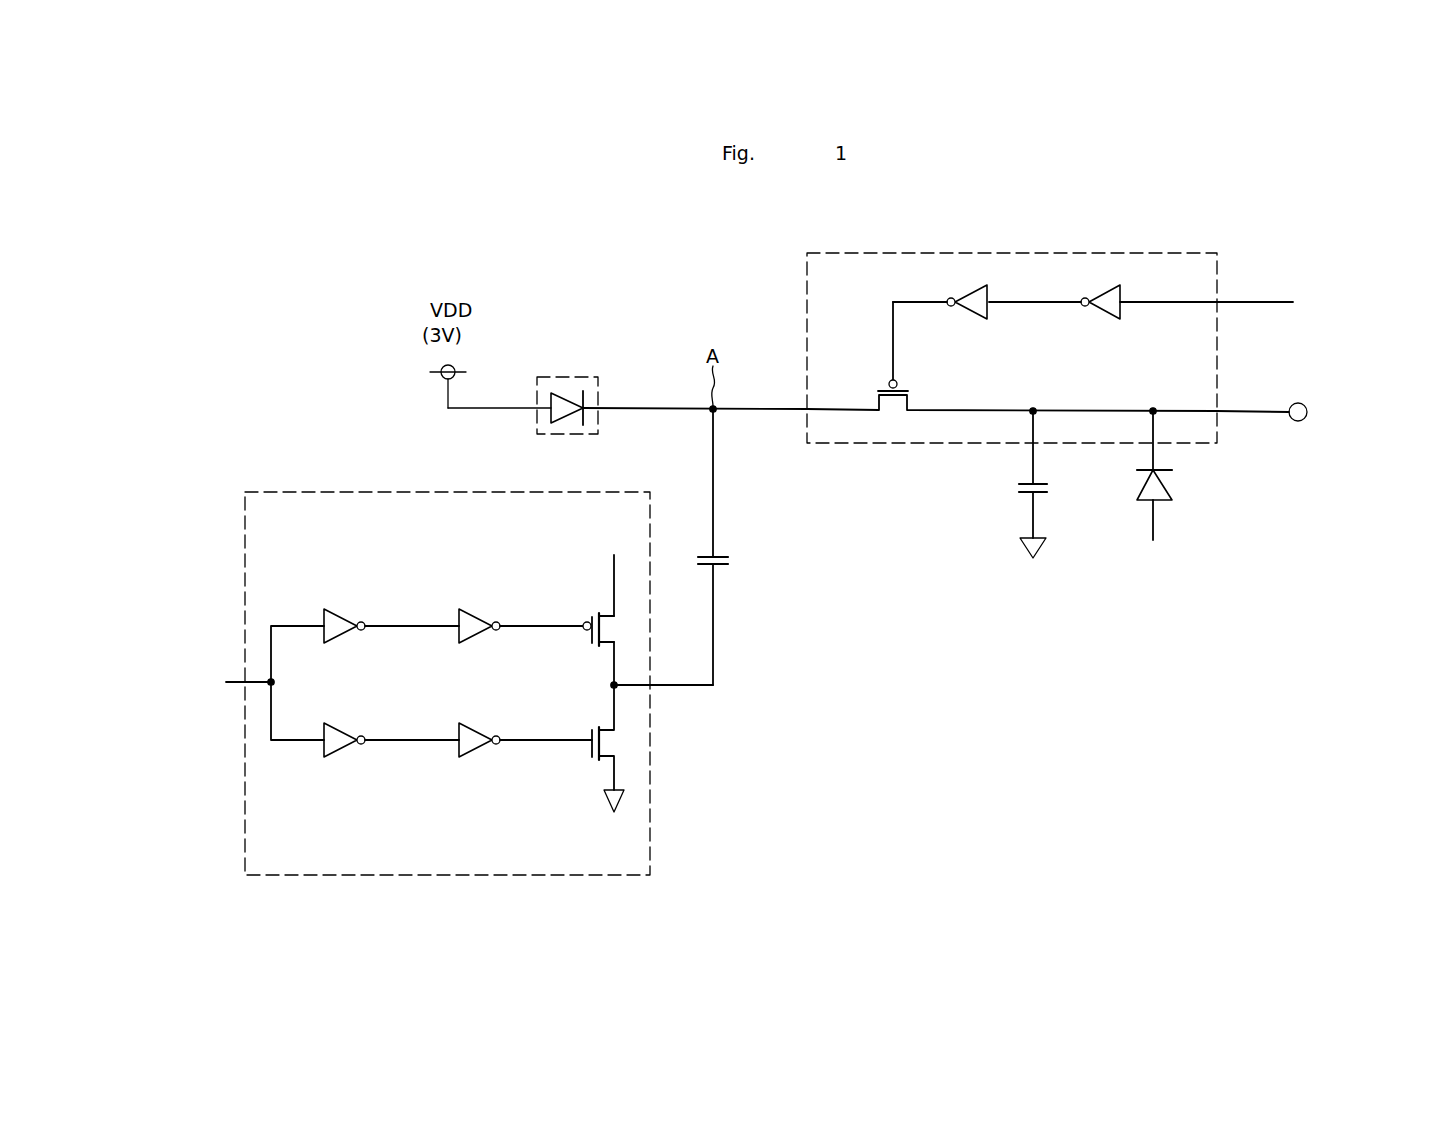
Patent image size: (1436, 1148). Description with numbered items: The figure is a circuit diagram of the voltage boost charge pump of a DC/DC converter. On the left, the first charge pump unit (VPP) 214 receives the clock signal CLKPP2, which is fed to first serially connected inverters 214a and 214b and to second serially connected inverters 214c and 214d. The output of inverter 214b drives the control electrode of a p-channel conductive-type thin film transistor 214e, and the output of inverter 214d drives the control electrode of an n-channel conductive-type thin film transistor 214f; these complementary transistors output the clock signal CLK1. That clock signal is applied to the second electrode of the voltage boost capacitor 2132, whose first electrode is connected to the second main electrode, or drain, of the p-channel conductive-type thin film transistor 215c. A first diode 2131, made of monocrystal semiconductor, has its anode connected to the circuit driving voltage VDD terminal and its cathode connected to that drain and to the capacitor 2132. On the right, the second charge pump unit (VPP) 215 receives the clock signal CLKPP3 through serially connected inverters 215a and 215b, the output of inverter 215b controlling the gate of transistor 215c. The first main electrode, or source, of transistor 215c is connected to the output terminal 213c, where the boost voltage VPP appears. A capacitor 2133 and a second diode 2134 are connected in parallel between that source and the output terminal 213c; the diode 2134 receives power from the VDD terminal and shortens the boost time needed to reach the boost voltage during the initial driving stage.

The first diode 2131 is at (571, 397).
The voltage boost capacitor 2132 is at (733, 560).
The capacitor 2133 is at (1017, 482).
The second diode 2134 is at (1175, 484).
The output terminal 213c is at (1307, 412).
The first charge pump unit (VPP) 214 is at (394, 492).
The inverter 214a is at (342, 618).
The inverter 214b is at (477, 618).
The inverter 214c is at (340, 748).
The inverter 214d is at (475, 748).
The p-channel conductive-type thin film transistor 214e is at (597, 613).
The n-channel conductive-type thin film transistor 214f is at (597, 727).
The second charge pump unit (VPP) 215 is at (1175, 253).
The inverter 215a is at (1122, 314).
The inverter 215b is at (989, 314).
The p-channel conductive-type thin film transistor 215c is at (908, 405).